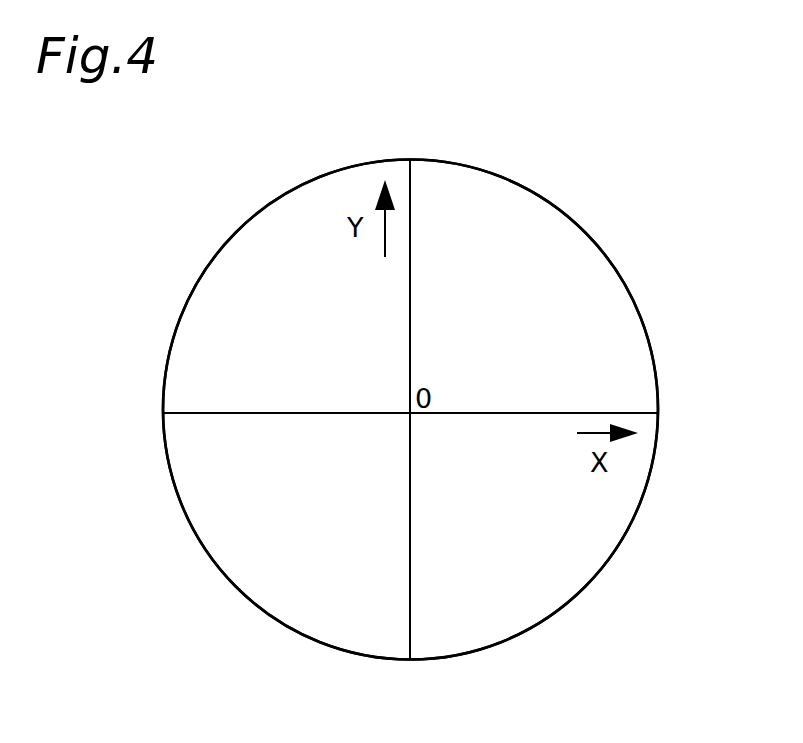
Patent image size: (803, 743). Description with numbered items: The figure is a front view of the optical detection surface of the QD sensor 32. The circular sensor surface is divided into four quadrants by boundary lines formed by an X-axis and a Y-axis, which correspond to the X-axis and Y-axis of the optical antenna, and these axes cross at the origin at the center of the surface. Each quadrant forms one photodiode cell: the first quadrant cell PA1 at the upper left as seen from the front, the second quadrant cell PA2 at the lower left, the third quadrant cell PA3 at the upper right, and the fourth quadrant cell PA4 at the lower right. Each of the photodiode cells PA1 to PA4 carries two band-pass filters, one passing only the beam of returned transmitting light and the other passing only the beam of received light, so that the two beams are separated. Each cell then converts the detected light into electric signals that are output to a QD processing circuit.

The QD sensor 32 is at (525, 188).
The first quadrant photodiode cell PA1 is at (230, 283).
The second quadrant photodiode cell PA2 is at (233, 562).
The third quadrant photodiode cell PA3 is at (583, 277).
The fourth quadrant photodiode cell PA4 is at (585, 558).